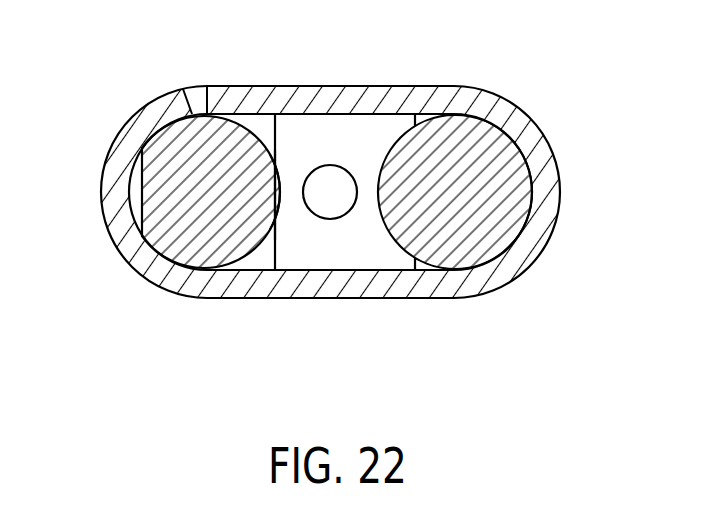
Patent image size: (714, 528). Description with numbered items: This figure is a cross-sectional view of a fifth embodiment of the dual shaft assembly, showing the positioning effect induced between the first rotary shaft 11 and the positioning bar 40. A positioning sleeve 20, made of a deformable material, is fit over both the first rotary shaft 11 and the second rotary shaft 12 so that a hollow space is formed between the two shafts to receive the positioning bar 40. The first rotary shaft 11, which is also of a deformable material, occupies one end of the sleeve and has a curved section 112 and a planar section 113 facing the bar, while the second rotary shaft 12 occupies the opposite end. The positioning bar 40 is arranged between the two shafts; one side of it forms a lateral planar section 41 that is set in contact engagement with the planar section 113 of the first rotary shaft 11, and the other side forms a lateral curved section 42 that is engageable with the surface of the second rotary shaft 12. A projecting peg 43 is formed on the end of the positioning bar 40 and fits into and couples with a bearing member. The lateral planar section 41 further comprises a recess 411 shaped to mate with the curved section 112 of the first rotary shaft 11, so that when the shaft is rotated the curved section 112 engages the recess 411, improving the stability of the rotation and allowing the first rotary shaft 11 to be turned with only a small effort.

The positioning sleeve 20 is at (392, 98).
The first rotary shaft 11 is at (191, 183).
The curved section 112 is at (242, 112).
The planar section 113 is at (277, 218).
The second rotary shaft 12 is at (470, 185).
The positioning bar 40 is at (335, 145).
The lateral planar section 41 is at (278, 195).
The recess 411 is at (280, 194).
The lateral curved section 42 is at (372, 209).
The projecting peg 43 is at (323, 188).